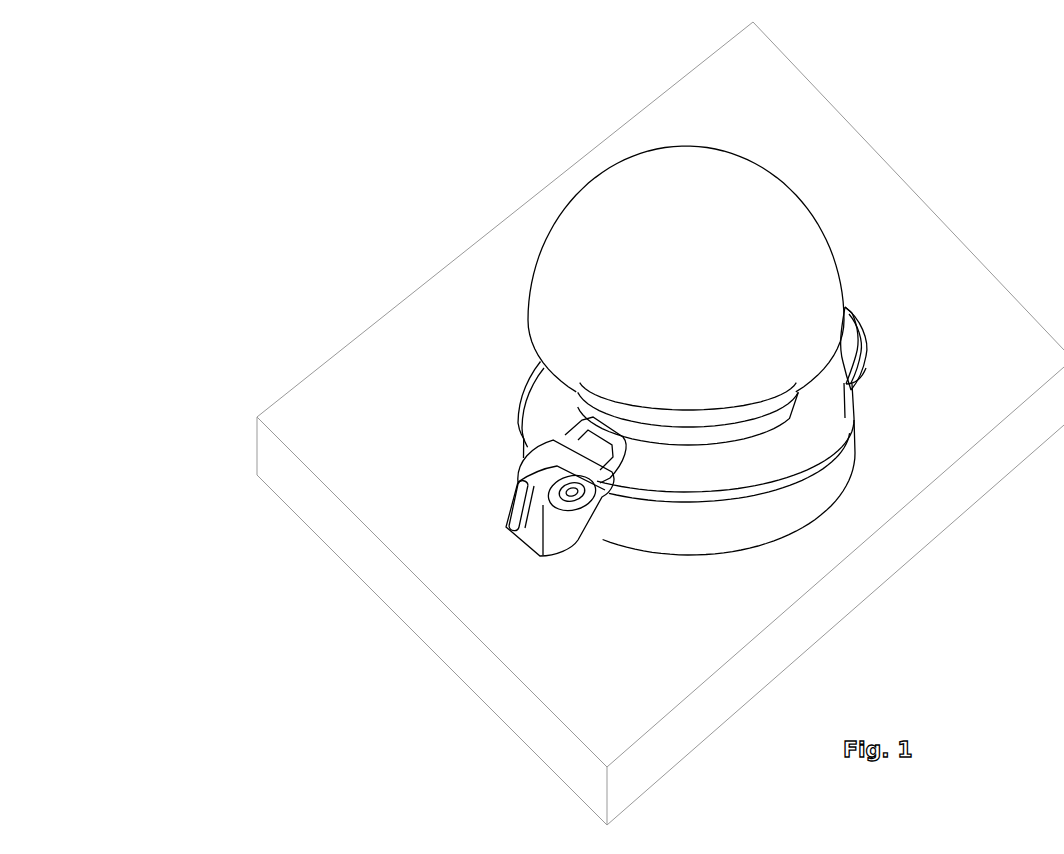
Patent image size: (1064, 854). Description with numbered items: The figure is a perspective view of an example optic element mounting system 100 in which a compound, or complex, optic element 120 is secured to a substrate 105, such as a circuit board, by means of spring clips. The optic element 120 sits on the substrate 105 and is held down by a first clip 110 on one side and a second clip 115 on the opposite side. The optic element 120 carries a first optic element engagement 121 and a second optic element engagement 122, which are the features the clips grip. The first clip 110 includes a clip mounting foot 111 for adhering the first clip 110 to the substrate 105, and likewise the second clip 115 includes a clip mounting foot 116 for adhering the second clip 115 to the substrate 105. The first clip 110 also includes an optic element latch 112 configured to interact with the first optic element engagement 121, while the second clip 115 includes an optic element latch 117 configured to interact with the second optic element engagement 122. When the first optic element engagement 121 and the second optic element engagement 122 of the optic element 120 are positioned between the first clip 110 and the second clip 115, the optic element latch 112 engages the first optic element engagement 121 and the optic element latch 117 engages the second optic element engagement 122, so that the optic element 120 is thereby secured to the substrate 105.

The optic element mounting system 100 is at (258, 153).
The substrate 105 is at (612, 684).
The first clip 110 is at (508, 513).
The clip mounting foot 111 is at (575, 552).
The optic element latch 112 is at (587, 503).
The second clip 115 is at (866, 345).
The clip mounting foot 116 is at (852, 384).
The optic element latch 117 is at (850, 311).
The complex optic element 120 is at (665, 227).
The first optic element engagement 121 is at (590, 448).
The second optic element engagement 122 is at (845, 309).